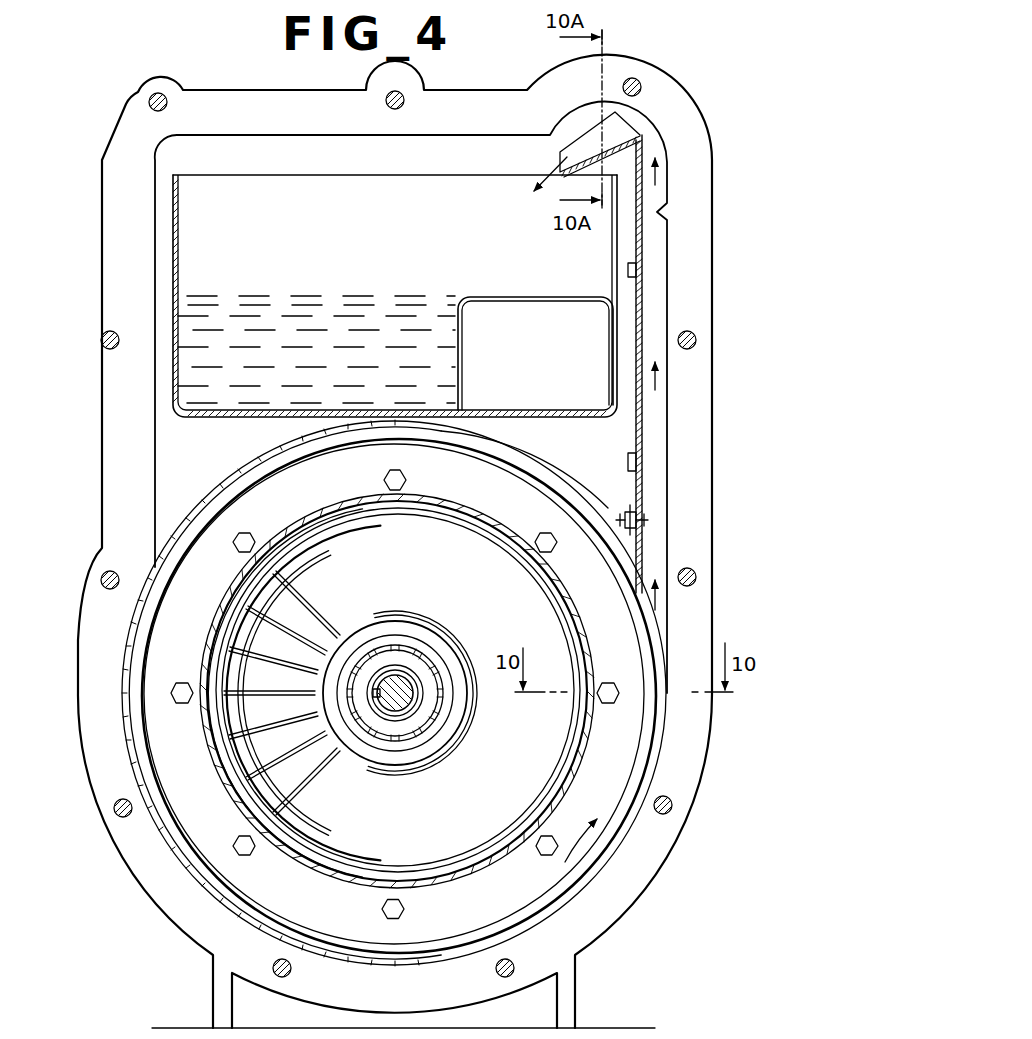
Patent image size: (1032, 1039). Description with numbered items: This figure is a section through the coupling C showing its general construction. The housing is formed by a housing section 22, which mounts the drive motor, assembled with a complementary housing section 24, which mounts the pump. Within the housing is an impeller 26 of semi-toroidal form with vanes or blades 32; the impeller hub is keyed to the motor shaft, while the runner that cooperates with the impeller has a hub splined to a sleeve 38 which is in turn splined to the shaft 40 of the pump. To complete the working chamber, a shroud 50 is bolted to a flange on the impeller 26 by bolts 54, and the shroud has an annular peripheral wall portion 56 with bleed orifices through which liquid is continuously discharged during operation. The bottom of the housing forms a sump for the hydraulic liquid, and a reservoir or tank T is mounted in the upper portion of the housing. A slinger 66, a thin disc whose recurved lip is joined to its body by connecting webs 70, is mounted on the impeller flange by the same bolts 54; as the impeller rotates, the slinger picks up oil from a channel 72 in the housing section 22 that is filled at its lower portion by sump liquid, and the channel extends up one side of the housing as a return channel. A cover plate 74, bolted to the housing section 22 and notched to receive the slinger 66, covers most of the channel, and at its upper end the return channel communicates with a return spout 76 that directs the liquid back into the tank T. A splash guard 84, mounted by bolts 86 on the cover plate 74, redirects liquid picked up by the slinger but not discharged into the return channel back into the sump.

The coupling C is at (100, 110).
The reservoir or tank T is at (341, 285).
The housing section 22 is at (102, 258).
The complementary housing section 24 is at (430, 675).
The impeller 26 is at (376, 532).
The vanes or blades 32 is at (300, 640).
The sleeve 38 is at (412, 674).
The shaft 40 is at (392, 682).
The shroud 50 is at (498, 873).
The bolts 54 is at (539, 534).
The annular peripheral wall portion 56 is at (470, 886).
The slinger 66 is at (580, 883).
The connecting webs 70 is at (168, 562).
The channel 72 is at (667, 455).
The cover plate 74 is at (637, 433).
The return spout 76 is at (578, 166).
The splash guard 84 is at (567, 484).
The bolts 86 is at (649, 520).